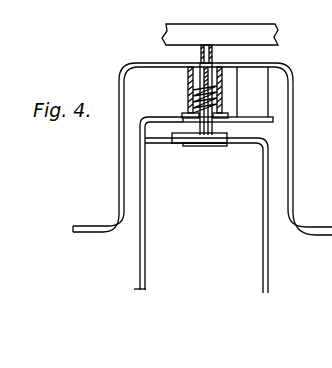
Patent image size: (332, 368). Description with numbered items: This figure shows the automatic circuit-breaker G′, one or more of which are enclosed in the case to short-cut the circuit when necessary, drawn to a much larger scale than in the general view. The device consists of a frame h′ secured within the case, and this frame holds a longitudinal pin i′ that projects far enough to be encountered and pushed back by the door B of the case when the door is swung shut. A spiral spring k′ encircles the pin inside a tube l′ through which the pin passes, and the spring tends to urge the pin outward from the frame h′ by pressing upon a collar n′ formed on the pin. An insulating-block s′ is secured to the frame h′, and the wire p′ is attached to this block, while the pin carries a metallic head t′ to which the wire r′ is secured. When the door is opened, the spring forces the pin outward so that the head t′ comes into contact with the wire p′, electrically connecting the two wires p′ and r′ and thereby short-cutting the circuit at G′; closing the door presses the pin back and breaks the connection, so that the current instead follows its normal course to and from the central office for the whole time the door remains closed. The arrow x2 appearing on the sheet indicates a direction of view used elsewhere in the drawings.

The frame h′ is at (119, 140).
The circuit-breaker G′ is at (164, 33).
The door B is at (212, 35).
The longitudinal pin i′ is at (213, 54).
The collar n′ is at (190, 82).
The spiral spring k′ is at (194, 100).
The tube l′ is at (230, 92).
The insulating-block s′ is at (259, 92).
The wire p′ is at (158, 203).
The wire r′ is at (211, 215).
The metallic head t′ is at (181, 142).
The arrow x2 is at (330, 317).